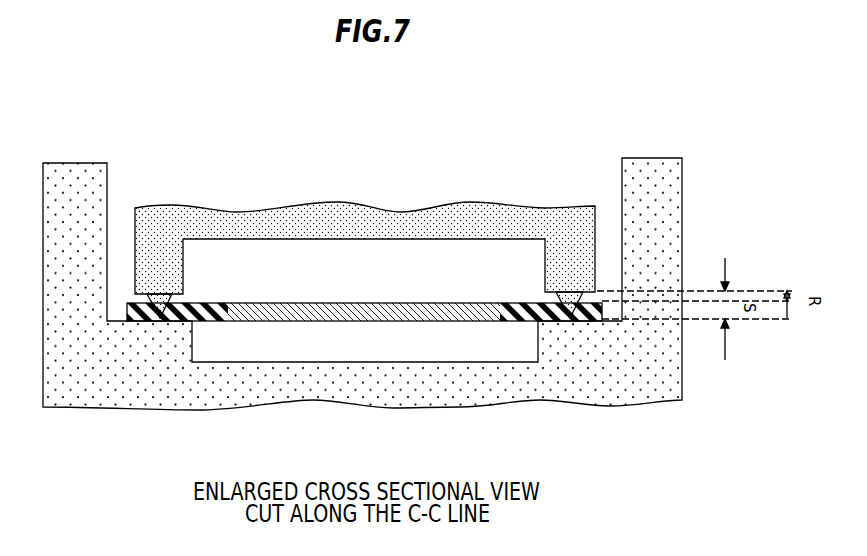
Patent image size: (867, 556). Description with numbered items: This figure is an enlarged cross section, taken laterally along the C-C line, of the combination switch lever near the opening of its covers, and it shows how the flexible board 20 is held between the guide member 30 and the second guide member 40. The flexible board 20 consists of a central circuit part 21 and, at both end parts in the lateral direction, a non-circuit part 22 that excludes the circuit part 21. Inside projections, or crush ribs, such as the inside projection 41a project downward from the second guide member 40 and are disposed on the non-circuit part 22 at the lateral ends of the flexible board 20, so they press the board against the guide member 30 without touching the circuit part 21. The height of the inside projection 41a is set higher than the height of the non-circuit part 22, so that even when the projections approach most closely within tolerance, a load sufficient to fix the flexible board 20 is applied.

The flexible board 20 is at (353, 225).
The circuit part 21 is at (357, 303).
The non-circuit part 22 is at (217, 303).
The guide member 30 is at (363, 390).
The second guide member 40 is at (556, 217).
The inside projection 41a is at (156, 321).